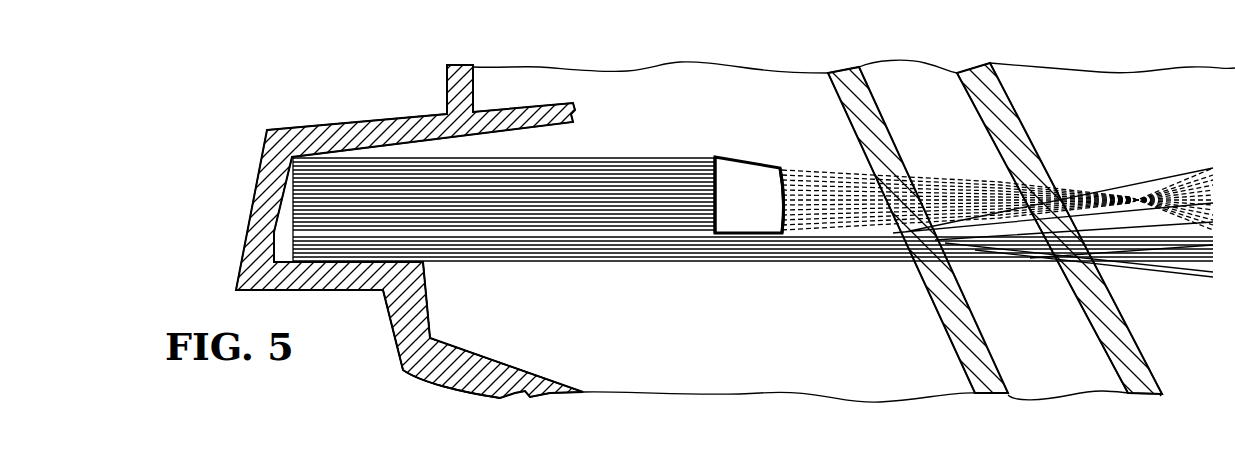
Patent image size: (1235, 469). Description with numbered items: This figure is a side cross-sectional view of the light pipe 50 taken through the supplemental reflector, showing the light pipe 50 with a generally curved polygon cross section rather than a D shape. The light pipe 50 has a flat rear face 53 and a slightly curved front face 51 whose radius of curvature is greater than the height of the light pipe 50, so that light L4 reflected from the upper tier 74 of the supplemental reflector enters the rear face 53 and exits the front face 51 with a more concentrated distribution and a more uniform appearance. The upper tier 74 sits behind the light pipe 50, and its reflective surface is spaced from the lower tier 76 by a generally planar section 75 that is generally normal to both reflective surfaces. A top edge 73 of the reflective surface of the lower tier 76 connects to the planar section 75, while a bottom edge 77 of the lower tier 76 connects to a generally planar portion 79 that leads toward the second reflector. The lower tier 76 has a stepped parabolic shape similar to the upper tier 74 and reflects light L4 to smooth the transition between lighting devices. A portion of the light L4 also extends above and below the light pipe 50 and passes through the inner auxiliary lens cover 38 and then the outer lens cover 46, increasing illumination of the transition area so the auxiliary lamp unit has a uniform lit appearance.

The inner auxiliary lens cover 38 is at (848, 82).
The outer lens cover 46 is at (997, 100).
The light pipe 50 is at (735, 172).
The front face 51 is at (784, 172).
The rear face 53 is at (705, 168).
The top edge 73 is at (423, 263).
The upper tier 74 is at (293, 231).
The planar section 75 is at (340, 278).
The lower tier 76 is at (393, 327).
The bottom edge 77 is at (430, 337).
The generally planar portion 79 is at (445, 385).
The light L4 is at (600, 157).